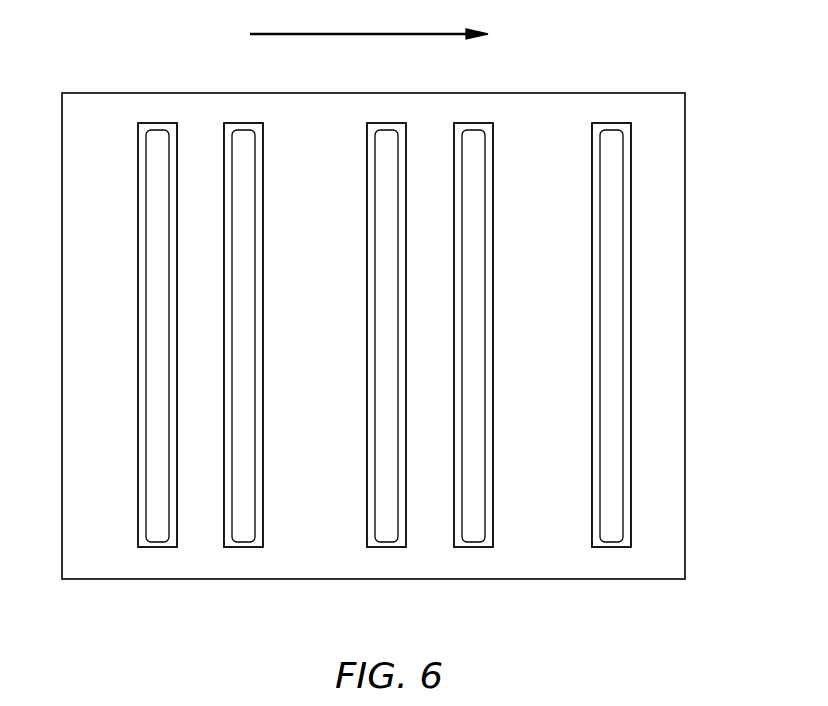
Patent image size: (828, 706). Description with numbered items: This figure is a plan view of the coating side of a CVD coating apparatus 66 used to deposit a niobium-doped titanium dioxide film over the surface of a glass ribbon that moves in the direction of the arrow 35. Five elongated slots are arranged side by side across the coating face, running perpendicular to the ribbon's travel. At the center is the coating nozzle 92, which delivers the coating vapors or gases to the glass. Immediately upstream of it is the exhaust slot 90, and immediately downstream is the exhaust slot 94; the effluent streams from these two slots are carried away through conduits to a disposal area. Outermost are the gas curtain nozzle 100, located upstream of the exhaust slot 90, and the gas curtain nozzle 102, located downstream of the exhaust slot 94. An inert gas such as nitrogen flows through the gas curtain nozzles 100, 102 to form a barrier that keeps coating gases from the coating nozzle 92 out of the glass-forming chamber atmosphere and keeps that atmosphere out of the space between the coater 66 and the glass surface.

The CVD coating apparatus 66 is at (622, 61).
The arrow 35 is at (373, 37).
The gas curtain nozzle 100 is at (158, 547).
The exhaust slot 90 is at (240, 547).
The coating nozzle 92 is at (388, 547).
The exhaust slot 94 is at (470, 547).
The gas curtain nozzle 102 is at (607, 547).